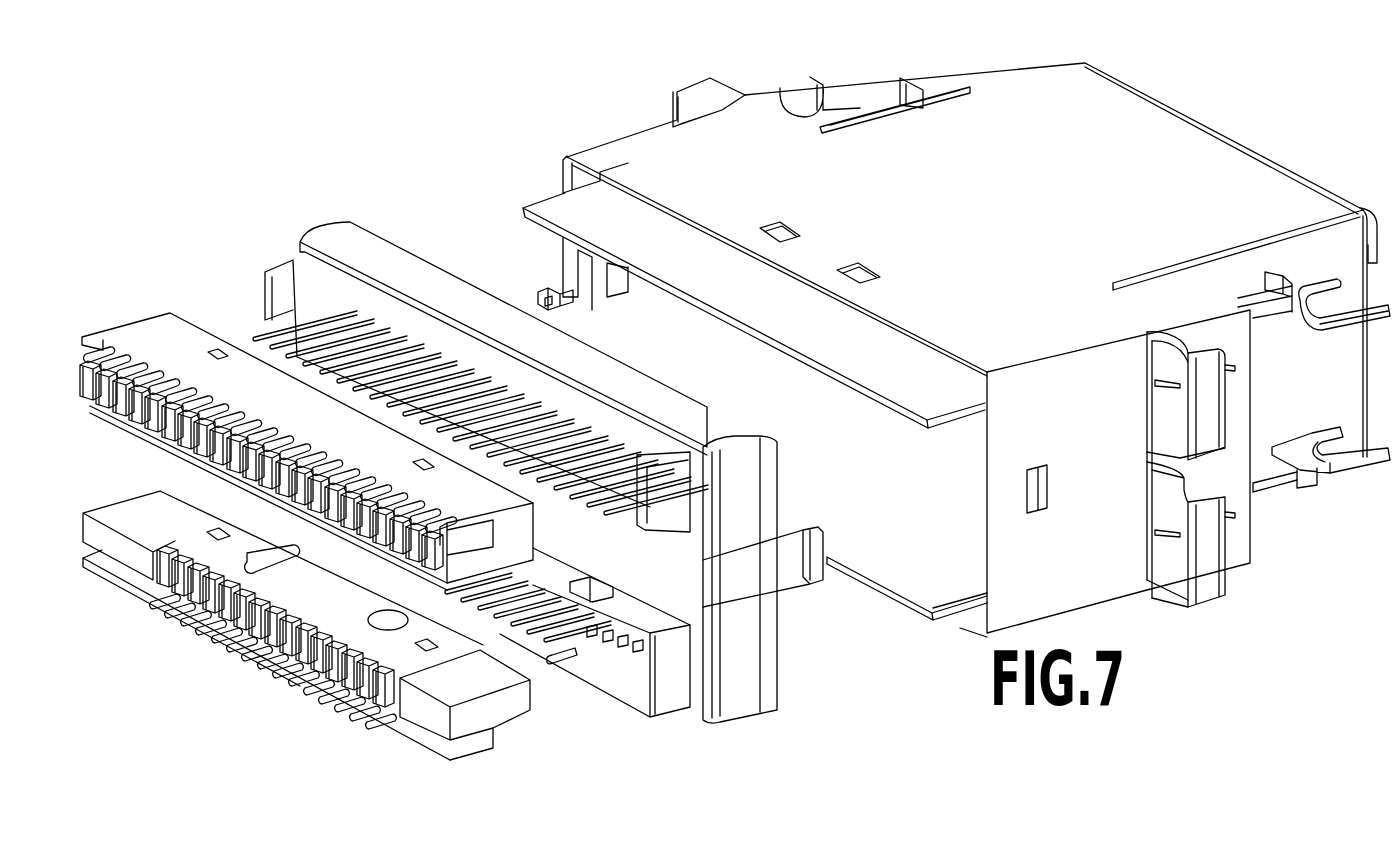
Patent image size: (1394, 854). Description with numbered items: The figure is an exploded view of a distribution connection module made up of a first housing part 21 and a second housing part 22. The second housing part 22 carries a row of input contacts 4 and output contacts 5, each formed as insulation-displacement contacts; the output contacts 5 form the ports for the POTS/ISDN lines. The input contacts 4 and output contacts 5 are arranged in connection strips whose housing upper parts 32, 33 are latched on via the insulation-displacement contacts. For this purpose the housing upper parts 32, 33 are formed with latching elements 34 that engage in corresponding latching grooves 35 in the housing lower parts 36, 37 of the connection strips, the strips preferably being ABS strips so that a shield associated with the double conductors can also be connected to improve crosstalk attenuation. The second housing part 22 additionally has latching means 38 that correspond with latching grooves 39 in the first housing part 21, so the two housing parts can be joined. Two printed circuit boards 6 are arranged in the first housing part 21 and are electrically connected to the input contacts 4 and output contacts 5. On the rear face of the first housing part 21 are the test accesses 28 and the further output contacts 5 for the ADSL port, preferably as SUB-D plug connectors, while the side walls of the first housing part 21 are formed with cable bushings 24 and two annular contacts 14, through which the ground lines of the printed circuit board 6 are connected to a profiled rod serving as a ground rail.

The input contacts 4 is at (625, 505).
The output contacts 5 is at (549, 668).
The printed circuit boards 6 is at (730, 275).
The annular contacts 14 is at (1330, 328).
The first housing part 21 is at (1135, 145).
The second housing part 22 is at (470, 368).
The cable bushings 24 is at (1207, 580).
The test accesses 28 is at (1372, 214).
The housing upper part 32 is at (160, 340).
The housing upper part 33 is at (478, 683).
The latching elements 34 is at (215, 350).
The latching grooves 35 is at (353, 333).
The housing lower part 36 is at (680, 496).
The housing lower part 37 is at (573, 658).
The latching means 38 is at (546, 277).
The latching grooves 39 is at (790, 228).